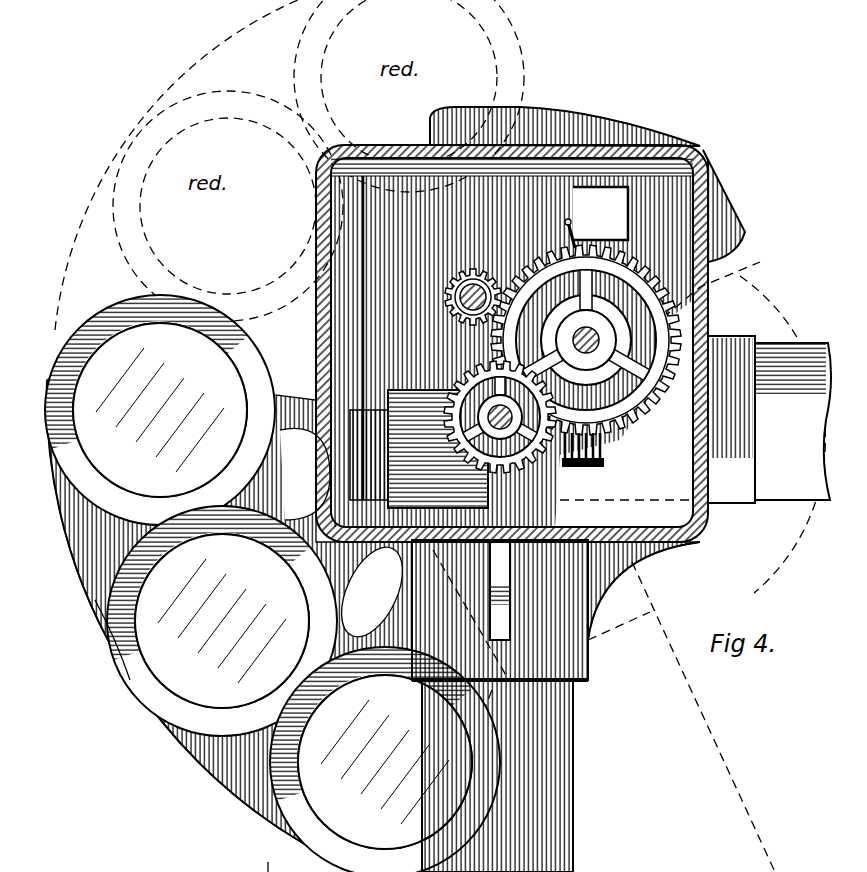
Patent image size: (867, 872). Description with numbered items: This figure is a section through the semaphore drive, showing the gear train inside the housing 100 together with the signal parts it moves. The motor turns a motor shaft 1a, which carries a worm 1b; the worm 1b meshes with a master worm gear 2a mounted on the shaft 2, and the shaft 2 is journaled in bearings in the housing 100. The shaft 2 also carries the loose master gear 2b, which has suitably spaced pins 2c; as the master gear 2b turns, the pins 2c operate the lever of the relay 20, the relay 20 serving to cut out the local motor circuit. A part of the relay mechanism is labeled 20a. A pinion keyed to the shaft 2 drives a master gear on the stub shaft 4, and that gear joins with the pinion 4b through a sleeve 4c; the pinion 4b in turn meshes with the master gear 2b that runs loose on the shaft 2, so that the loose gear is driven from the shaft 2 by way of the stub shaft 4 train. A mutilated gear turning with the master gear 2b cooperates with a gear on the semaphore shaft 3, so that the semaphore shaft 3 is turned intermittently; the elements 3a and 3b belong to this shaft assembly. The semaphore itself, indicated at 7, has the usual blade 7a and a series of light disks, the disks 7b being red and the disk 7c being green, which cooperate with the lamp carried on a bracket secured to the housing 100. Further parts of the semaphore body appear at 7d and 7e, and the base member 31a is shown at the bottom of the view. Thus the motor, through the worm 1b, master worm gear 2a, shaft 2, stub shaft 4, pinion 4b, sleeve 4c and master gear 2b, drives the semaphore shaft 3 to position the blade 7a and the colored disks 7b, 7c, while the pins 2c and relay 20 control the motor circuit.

The housing 100 is at (410, 147).
The signal cylinder 7 is at (283, 490).
The blade 7a is at (769, 419).
The red light disks 7b is at (228, 590).
The green light disk 7c is at (385, 759).
The housing boss 7d is at (545, 113).
The cylinder rim 7e is at (103, 622).
The relay 20 is at (600, 205).
The latch lever 20a is at (571, 222).
The shaft 2 is at (590, 354).
The master worm gear 2a is at (590, 355).
The master gear 2b is at (648, 392).
The pins 2c is at (560, 262).
The semaphore shaft 3 is at (476, 416).
The pinion drum 3a is at (438, 449).
The support post 3b is at (445, 450).
The stub shaft 4 is at (456, 310).
The pinion 4b is at (462, 312).
The sleeve 4c is at (460, 303).
The motor shaft 1a is at (566, 468).
The worm 1b is at (593, 468).
The base plate 31a is at (264, 862).